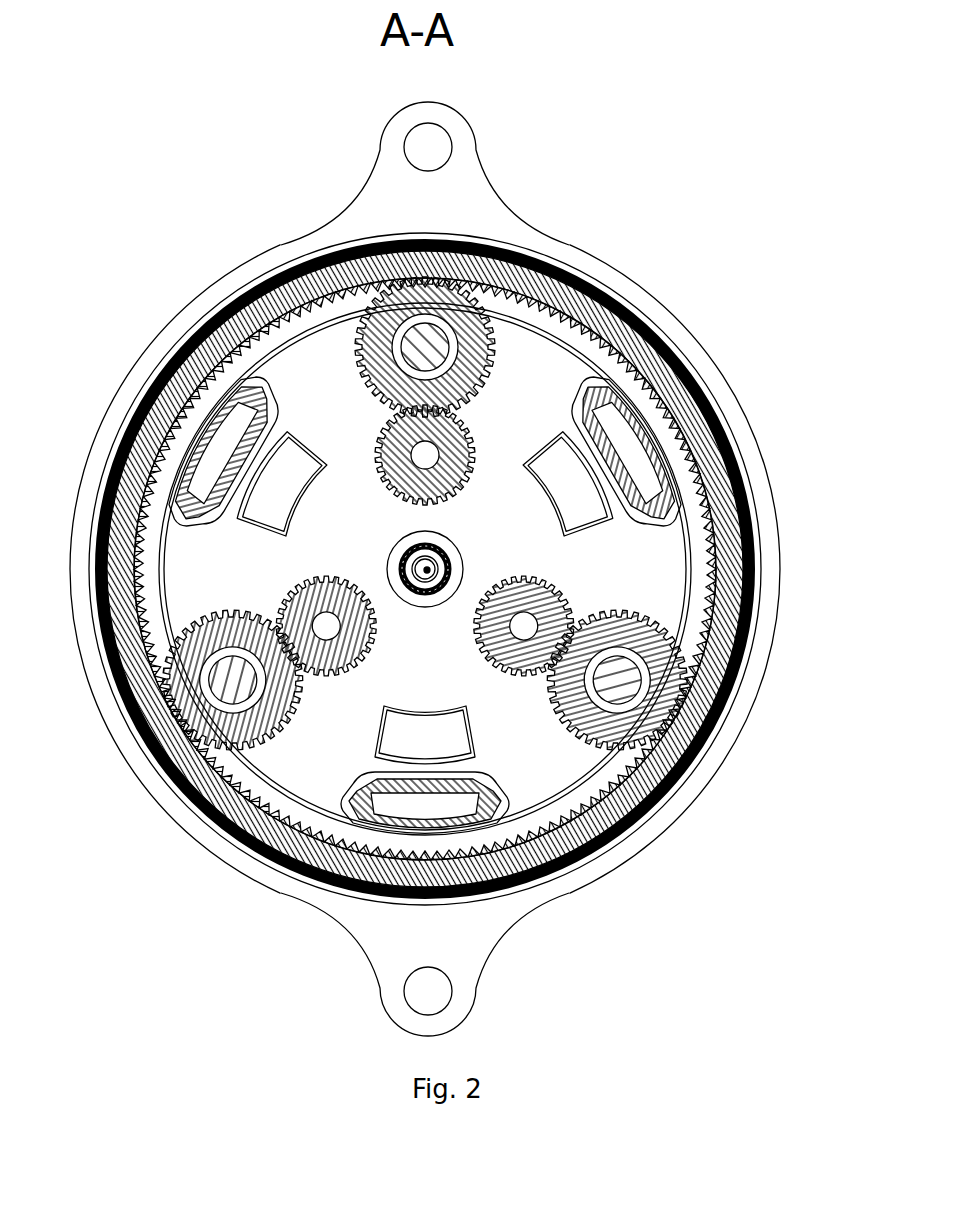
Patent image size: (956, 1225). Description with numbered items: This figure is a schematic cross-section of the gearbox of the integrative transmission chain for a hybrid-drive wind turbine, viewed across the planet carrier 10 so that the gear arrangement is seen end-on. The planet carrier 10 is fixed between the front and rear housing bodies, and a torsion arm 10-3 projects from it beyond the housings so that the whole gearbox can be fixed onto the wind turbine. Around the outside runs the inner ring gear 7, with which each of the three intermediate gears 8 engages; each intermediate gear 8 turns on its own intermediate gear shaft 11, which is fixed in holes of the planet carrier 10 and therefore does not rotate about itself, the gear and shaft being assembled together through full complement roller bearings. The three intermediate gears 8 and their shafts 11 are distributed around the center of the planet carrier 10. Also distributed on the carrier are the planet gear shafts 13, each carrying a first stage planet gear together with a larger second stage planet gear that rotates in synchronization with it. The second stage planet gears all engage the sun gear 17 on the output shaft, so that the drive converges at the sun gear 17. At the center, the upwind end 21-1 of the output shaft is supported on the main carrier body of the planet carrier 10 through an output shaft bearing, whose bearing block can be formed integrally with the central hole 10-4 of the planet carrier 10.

The planet carrier 10 is at (692, 787).
The torsion arm 10-3 is at (463, 182).
The central hole of the planet carrier 10-4 is at (445, 608).
The inner ring gear 7 is at (472, 284).
The intermediate gear 8 is at (478, 340).
The intermediate gear shaft 11 is at (420, 353).
The planet gear shaft 13 is at (452, 440).
The sun gear 17 is at (440, 551).
The upwind end of the output shaft 21-1 is at (525, 545).